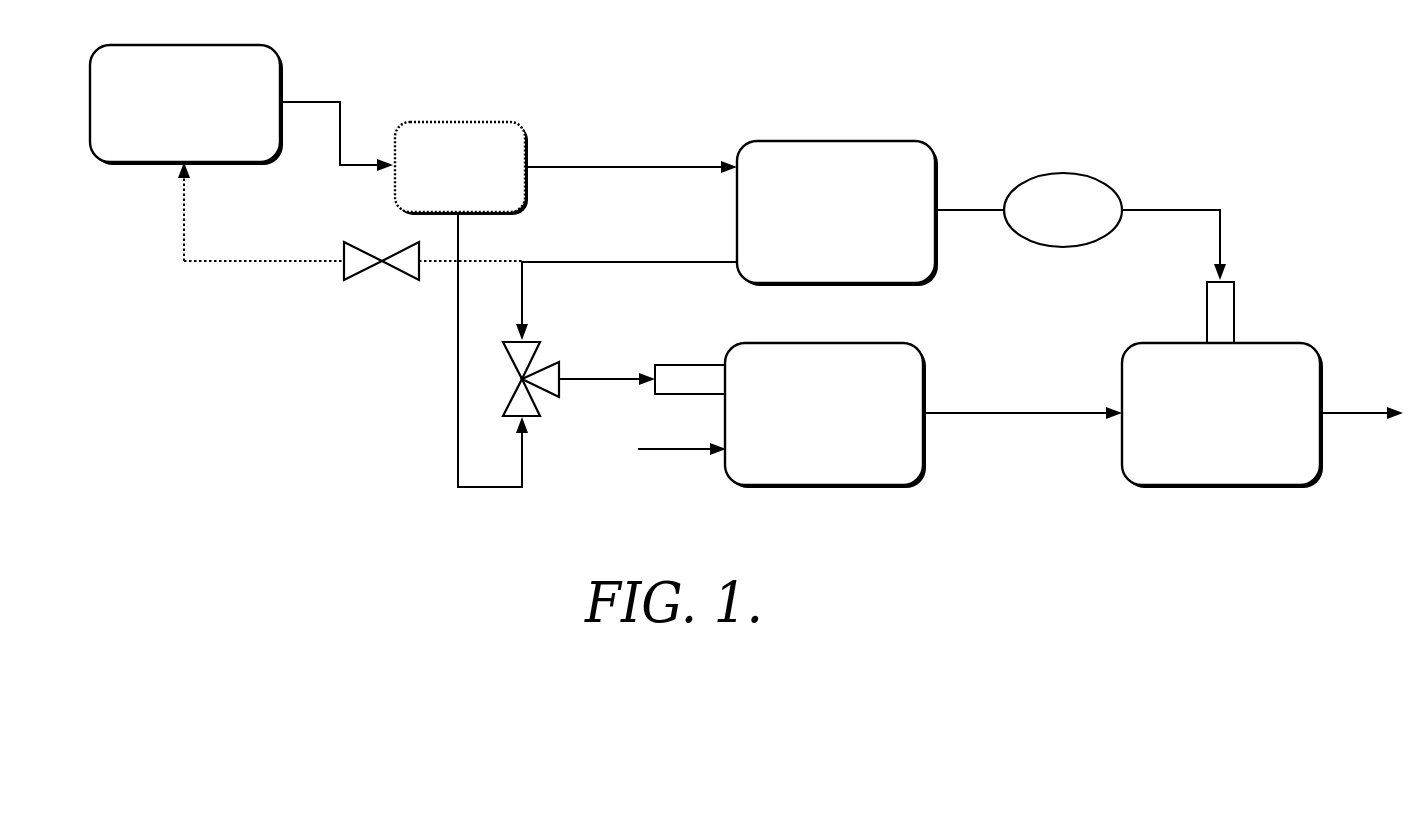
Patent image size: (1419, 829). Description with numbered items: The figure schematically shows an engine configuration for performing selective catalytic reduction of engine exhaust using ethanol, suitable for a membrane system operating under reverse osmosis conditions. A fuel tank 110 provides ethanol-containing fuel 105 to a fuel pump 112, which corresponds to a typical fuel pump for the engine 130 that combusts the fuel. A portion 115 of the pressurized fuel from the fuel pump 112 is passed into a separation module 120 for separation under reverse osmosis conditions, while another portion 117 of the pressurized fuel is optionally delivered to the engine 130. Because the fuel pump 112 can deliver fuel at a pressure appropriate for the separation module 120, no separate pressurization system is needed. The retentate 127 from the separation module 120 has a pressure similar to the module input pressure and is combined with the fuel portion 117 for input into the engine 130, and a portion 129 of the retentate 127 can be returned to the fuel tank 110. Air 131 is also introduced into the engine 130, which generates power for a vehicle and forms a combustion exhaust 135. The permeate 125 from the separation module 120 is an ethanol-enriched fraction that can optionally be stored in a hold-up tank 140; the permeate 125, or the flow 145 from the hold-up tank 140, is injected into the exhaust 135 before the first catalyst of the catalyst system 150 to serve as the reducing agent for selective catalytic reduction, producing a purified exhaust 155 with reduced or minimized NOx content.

The fuel tank 110 is at (163, 116).
The ethanol-containing fuel 105 is at (312, 102).
The fuel pump 112 is at (438, 180).
The portion of pressurized fuel 115 is at (603, 166).
The separation module 120 is at (814, 222).
The permeate 125 is at (971, 210).
The hold-up tank 140 is at (1085, 175).
The flow from the hold-up tank 145 is at (1210, 210).
The catalyst system 150 is at (1199, 424).
The purified exhaust 155 is at (1345, 412).
The retentate 127 is at (568, 262).
The portion of retentate 129 is at (246, 261).
The another portion of pressurized fuel 117 is at (456, 480).
The engine 130 is at (802, 424).
The air 131 is at (663, 452).
The combustion exhaust 135 is at (1010, 412).